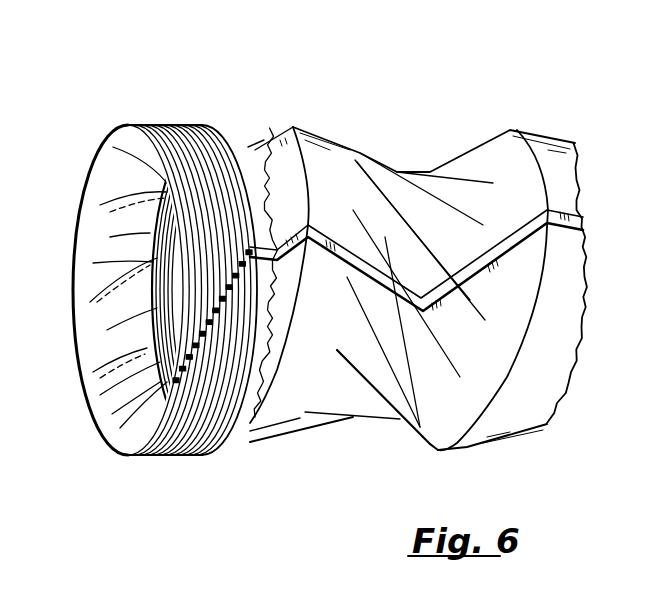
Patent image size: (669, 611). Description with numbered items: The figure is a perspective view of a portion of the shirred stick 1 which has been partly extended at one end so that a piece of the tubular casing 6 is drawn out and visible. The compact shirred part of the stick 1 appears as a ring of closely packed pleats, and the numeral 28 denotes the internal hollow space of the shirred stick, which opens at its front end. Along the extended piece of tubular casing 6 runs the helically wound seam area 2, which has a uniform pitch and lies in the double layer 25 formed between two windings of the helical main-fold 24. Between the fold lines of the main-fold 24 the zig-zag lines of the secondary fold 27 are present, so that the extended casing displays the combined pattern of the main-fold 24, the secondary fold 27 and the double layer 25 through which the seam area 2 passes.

The shirred tubular casing 1 is at (164, 122).
The seam area 2 is at (218, 323).
The tubular casing 6 is at (591, 145).
The main-fold 24 is at (241, 123).
The double layer 25 is at (254, 152).
The secondary fold 27 is at (112, 414).
The internal hollow space 28 is at (126, 334).